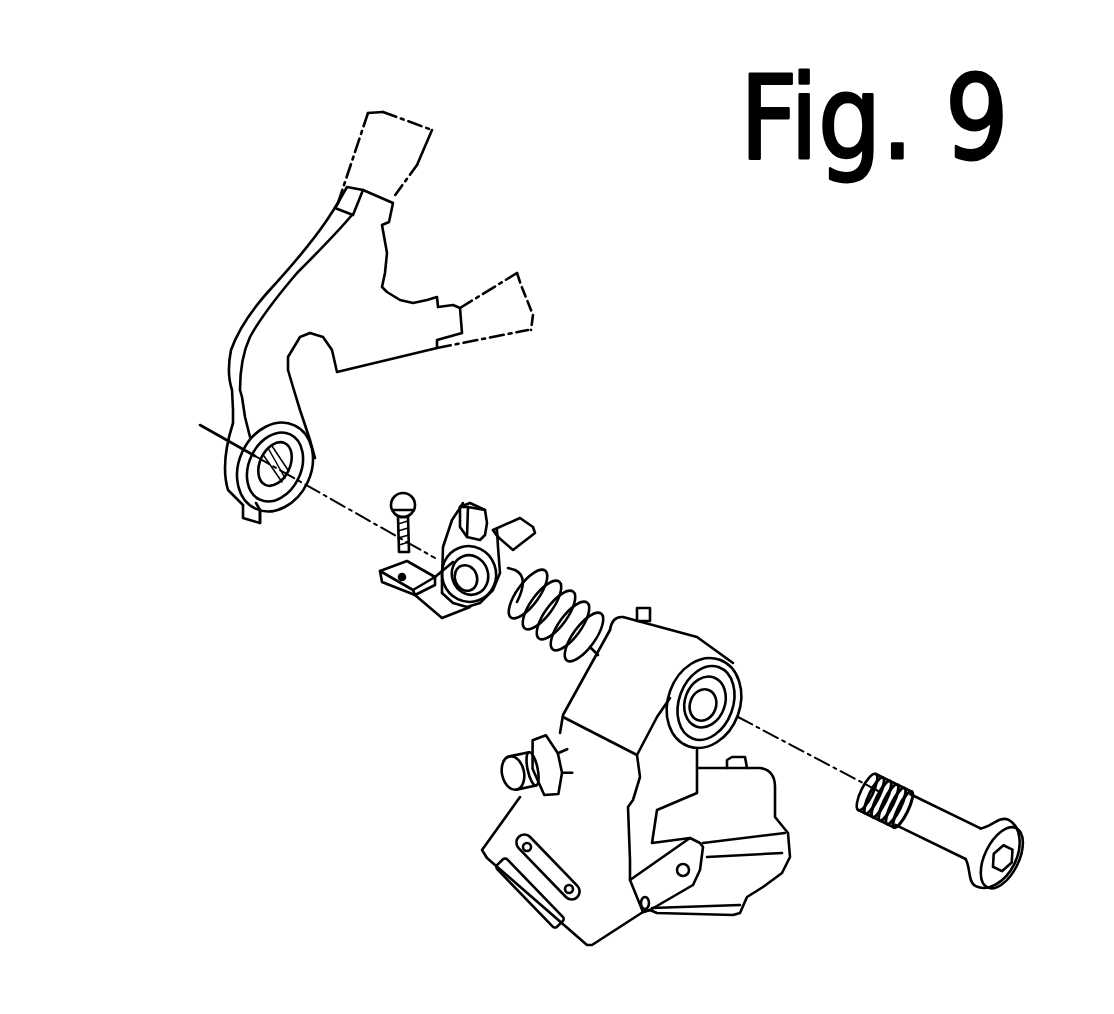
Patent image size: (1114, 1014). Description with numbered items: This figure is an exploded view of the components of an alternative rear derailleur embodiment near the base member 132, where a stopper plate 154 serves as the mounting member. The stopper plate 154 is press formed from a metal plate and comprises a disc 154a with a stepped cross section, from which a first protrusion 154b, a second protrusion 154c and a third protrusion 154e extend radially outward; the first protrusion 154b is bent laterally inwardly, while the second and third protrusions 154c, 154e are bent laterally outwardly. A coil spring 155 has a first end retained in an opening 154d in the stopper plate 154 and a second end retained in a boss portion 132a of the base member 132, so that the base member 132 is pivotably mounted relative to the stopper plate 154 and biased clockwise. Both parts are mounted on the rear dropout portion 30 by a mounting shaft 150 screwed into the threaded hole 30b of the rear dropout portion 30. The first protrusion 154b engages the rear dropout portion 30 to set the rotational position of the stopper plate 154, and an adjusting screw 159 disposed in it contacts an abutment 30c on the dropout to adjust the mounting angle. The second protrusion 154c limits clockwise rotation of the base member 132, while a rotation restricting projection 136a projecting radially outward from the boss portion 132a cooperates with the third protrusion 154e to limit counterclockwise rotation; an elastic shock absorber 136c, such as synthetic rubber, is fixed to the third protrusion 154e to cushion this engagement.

The rear dropout portion 30 is at (384, 289).
The threaded hole 30b is at (270, 518).
The abutment 30c is at (243, 510).
The base member 132 is at (693, 637).
The boss portion 132a is at (665, 643).
The rotation restricting projection 136a is at (643, 608).
The shock absorber 136c is at (497, 533).
The mounting shaft 150 is at (913, 823).
The stopper plate 154 is at (494, 498).
The disc 154a is at (443, 547).
The first protrusion 154b is at (387, 590).
The second protrusion 154c is at (500, 542).
The opening 154d is at (458, 607).
The third protrusion 154e is at (453, 503).
The coil spring 155 is at (567, 600).
The adjusting screw 159 is at (383, 582).